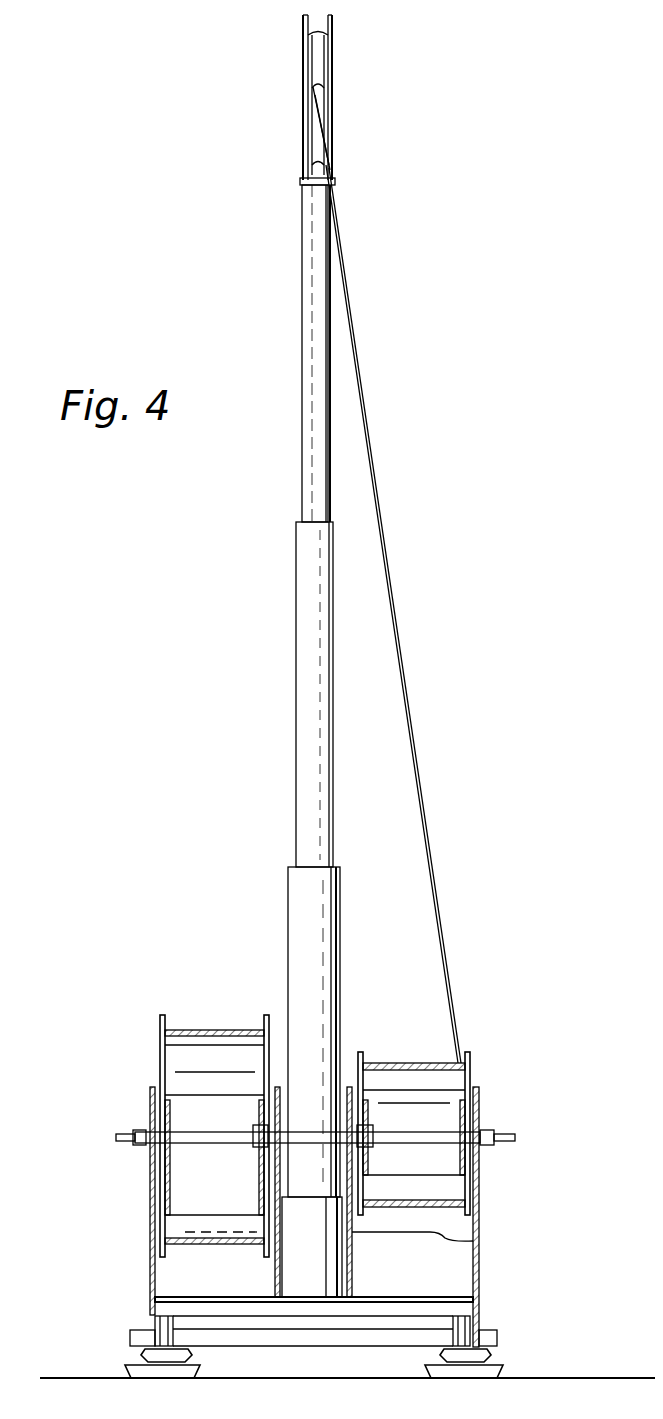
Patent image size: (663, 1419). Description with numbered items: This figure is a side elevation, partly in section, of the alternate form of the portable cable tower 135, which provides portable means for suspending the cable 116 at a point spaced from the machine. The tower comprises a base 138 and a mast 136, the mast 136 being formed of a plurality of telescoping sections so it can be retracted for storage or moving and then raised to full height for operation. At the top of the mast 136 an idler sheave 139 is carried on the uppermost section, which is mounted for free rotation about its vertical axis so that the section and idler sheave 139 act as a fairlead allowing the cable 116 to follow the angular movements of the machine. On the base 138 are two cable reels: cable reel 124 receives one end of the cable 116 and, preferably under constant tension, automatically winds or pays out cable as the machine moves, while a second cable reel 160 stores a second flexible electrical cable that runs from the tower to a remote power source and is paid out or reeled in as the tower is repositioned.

The cable 116 is at (413, 713).
The cable reel 124 is at (470, 1075).
The portable cable tower 135 is at (284, 915).
The mast 136 is at (300, 683).
The base 138 is at (480, 1276).
The idler sheave 139 is at (333, 67).
The second cable reel 160 is at (160, 1065).